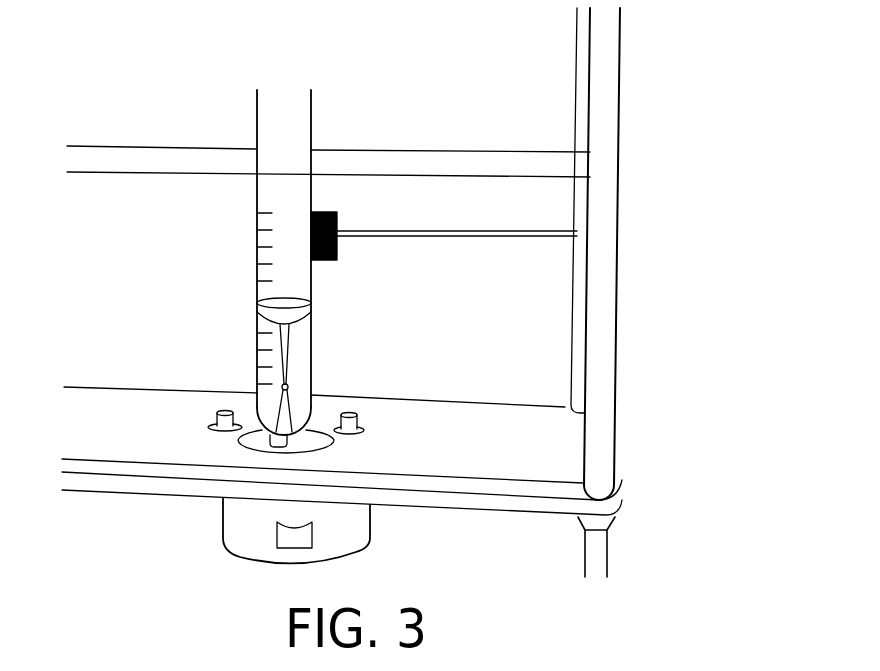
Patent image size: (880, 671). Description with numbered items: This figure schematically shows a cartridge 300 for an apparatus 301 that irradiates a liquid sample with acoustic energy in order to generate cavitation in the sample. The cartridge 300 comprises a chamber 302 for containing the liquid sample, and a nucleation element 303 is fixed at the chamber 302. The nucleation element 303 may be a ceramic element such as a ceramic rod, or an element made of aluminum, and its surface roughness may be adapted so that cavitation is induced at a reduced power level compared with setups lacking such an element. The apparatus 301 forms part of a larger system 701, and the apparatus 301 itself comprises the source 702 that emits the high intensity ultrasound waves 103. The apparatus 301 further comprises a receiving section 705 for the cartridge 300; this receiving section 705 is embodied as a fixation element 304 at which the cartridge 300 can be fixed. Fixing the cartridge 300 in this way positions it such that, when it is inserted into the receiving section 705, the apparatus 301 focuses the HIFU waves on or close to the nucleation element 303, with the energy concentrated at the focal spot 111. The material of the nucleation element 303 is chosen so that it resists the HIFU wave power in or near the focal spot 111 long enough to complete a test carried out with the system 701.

The system 701 is at (645, 87).
The receiving section 705 is at (364, 208).
The fixation element 304 is at (337, 253).
The cartridge 300 is at (300, 275).
The nucleation element 303 is at (300, 355).
The chamber 302 is at (300, 390).
The focal spot 111 is at (282, 386).
The high intensity ultrasound waves 103 is at (258, 408).
The apparatus 301 is at (223, 518).
The source 702 is at (312, 535).